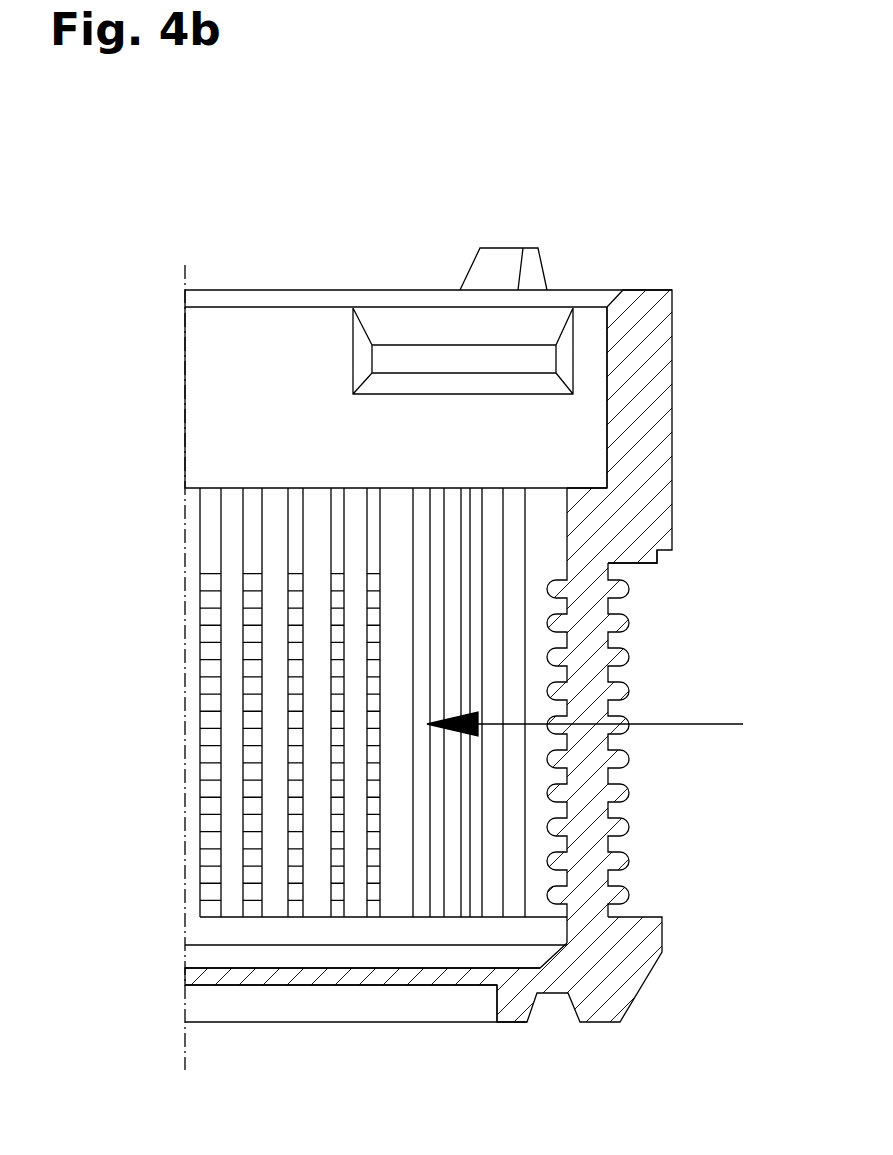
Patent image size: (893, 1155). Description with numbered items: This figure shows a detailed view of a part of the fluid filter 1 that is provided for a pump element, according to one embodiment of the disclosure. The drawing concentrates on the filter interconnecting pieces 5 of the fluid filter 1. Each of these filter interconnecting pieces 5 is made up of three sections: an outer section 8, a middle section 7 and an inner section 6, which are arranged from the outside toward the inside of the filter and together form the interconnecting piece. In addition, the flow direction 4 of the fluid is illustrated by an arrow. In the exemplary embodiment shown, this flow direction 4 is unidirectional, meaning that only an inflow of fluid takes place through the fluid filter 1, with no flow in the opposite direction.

The fluid filter 1 is at (464, 614).
The flow direction 4 is at (697, 724).
The filter interconnecting piece 5 is at (620, 583).
The inner section 6 is at (556, 801).
The middle section 7 is at (586, 801).
The outer section 8 is at (627, 802).